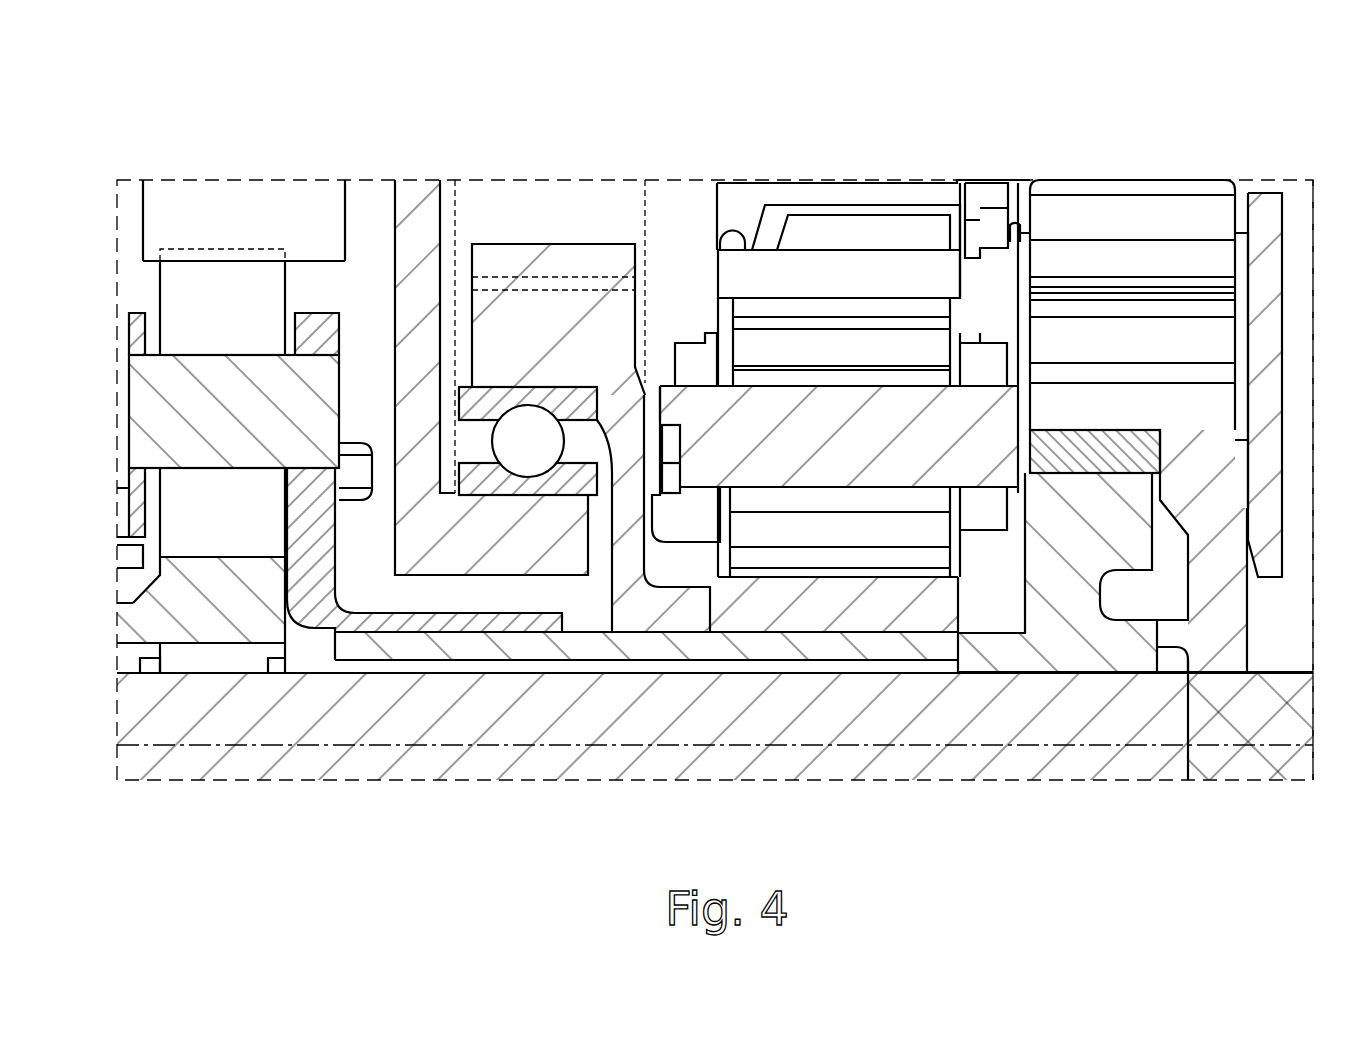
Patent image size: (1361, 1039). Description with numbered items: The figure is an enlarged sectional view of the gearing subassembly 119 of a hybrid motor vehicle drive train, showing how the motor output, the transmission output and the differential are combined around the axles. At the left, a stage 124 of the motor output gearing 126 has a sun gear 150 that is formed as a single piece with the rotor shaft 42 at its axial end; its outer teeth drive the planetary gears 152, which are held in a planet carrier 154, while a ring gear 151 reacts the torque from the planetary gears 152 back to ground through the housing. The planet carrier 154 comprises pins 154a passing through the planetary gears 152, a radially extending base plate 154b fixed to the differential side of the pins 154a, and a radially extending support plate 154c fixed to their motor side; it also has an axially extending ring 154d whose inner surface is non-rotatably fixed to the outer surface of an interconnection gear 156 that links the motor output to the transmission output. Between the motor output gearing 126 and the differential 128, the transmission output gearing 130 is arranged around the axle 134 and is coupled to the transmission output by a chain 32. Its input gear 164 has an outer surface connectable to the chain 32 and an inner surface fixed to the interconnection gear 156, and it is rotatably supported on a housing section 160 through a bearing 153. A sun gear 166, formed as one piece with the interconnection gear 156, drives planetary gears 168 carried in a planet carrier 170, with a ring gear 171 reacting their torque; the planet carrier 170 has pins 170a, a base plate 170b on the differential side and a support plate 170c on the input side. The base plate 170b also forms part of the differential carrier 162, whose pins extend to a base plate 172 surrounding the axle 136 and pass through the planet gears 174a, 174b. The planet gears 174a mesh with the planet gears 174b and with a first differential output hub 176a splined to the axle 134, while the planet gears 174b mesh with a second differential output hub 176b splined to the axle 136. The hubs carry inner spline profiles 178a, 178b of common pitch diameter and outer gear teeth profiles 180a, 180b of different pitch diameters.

The stage 124 is at (186, 166).
The motor output gearing 126 is at (162, 236).
The planetary gears 152 is at (263, 270).
The ring gear 151 is at (298, 196).
The base plate 154b is at (305, 330).
The chain 32 is at (472, 218).
The bearing 153 is at (483, 412).
The input gear 164 is at (557, 240).
The planetary gears 168 is at (748, 342).
The ring gear 171 is at (840, 268).
The transmission output gearing 130 is at (942, 123).
The base plate 170b is at (985, 358).
The differential 128 is at (1088, 173).
The gearing subassembly 119 is at (1248, 100).
The base plate 172 is at (1263, 212).
The differential carrier 162 is at (1270, 168).
The support plate 154c is at (135, 330).
The pins 154a is at (195, 378).
The planet carrier 154 is at (342, 302).
The housing section 160 is at (413, 423).
The planet carrier 170 is at (690, 330).
The support plate 170c is at (695, 355).
The pins 170a is at (839, 439).
The planetary gears 174a is at (1058, 458).
The planetary gears 174b is at (1202, 343).
The outer gear teeth profile 180a is at (1090, 478).
The outer gear teeth profile 180b is at (1190, 432).
The rotor shaft 42 is at (123, 633).
The sun gear 150 is at (228, 585).
The axle 134 is at (340, 757).
The ring 154d is at (442, 620).
The interconnection gear 156 is at (585, 648).
The sun gear 166 is at (800, 600).
The inner spline profile 178a is at (1005, 665).
The first differential output hub 176a is at (1103, 680).
The axle 136 is at (1213, 763).
The second differential output hub 176b is at (1223, 672).
The inner spline profile 178b is at (1207, 680).